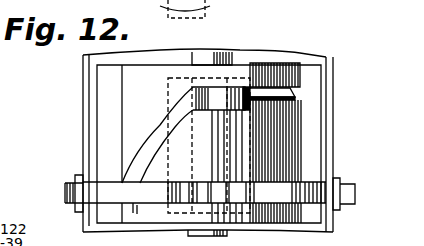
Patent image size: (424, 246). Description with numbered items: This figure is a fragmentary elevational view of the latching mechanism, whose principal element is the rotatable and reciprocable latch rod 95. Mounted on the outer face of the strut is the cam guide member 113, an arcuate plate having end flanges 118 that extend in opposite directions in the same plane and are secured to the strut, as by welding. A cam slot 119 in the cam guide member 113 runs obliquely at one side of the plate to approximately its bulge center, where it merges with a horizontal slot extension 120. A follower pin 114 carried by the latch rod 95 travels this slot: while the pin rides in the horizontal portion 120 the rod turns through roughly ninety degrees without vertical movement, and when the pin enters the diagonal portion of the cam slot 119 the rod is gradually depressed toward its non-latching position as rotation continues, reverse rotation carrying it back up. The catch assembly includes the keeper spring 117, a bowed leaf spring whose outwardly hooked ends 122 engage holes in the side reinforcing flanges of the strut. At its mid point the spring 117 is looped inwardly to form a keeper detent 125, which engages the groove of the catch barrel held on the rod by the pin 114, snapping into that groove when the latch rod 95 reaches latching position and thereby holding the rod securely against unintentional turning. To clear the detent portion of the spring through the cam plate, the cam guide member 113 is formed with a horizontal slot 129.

The latch rod 95 is at (208, 61).
The cam guide member 113 is at (128, 138).
The follower pin 114 is at (293, 90).
The keeper spring 117 is at (144, 215).
The end flanges 118 is at (105, 102).
The cam slot 119 is at (153, 130).
The horizontal slot extension 120 is at (240, 87).
The hooked ends 122 is at (66, 192).
The keeper detent 125 is at (198, 202).
The horizontal slot 129 is at (268, 173).